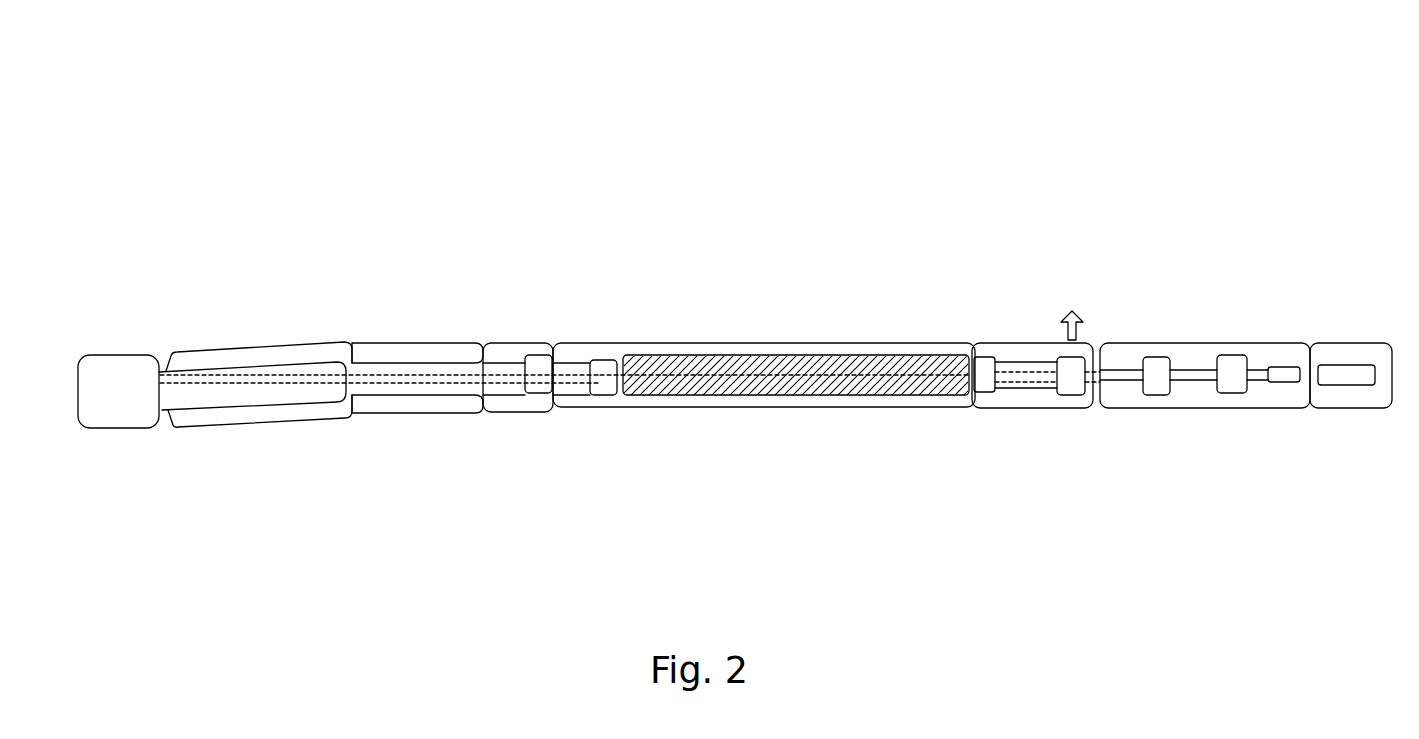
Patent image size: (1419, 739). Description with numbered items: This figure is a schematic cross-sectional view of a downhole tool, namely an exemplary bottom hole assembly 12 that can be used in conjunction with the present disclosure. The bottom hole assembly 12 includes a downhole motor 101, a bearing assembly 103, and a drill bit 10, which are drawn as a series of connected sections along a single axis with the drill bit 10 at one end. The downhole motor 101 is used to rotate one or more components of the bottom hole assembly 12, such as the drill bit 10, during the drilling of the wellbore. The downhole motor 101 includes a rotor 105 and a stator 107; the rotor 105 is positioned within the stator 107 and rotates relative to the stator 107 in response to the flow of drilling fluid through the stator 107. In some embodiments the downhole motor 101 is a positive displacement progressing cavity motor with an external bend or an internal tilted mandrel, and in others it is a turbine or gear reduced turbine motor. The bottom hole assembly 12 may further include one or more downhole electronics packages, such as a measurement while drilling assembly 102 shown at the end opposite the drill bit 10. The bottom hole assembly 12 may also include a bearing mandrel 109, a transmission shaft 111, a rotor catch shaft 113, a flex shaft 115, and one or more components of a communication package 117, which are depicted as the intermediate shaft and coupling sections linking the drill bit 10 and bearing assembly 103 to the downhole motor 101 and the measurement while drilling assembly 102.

The bottom hole assembly 12 is at (312, 104).
The drill bit 10 is at (127, 428).
The bearing assembly 103 is at (279, 230).
The bearing mandrel 109 is at (195, 370).
The transmission shaft 111 is at (438, 363).
The downhole motor 101 is at (721, 260).
The rotor 105 is at (813, 342).
The stator 107 is at (697, 407).
The rotor catch shaft 113 is at (1013, 362).
The flex shaft 115 is at (1118, 370).
The communication package 117 is at (1187, 381).
The measurement while drilling assembly 102 is at (1340, 385).